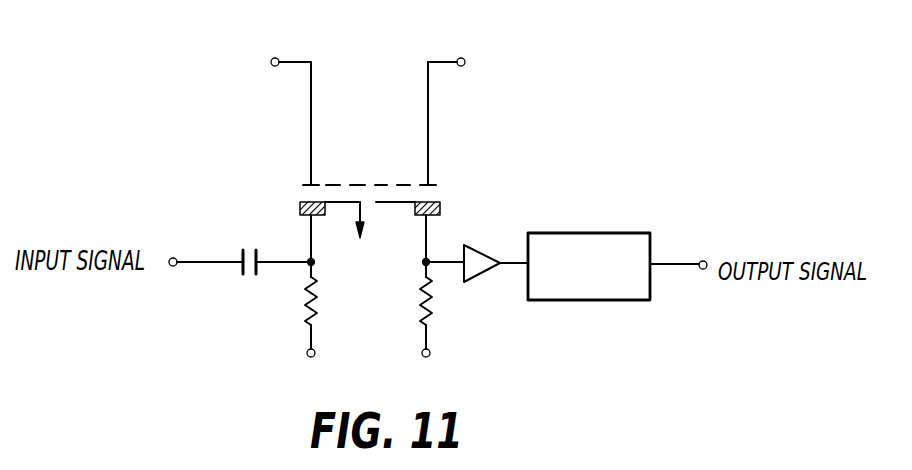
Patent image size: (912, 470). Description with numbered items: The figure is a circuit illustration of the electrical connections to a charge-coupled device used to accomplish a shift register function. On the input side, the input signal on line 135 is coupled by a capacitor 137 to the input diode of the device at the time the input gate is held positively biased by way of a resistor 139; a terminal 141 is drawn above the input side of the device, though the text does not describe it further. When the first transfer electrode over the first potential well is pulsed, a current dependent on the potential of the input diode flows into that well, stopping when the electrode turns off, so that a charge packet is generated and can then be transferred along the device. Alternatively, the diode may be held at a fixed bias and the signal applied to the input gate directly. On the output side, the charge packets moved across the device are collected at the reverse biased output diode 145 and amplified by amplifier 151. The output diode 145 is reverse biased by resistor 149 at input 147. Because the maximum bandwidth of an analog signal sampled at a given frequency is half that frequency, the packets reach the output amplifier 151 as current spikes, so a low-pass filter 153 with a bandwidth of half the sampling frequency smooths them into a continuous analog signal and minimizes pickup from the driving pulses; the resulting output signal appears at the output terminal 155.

The input signal line 135 is at (185, 264).
The capacitor 137 is at (247, 249).
The resistor 139 is at (304, 311).
The switch contact terminal 141 is at (311, 61).
The output diode 145 is at (397, 204).
The input 147 is at (445, 62).
The resistor 149 is at (429, 316).
The amplifier 151 is at (482, 253).
The low-pass filter 153 is at (607, 300).
The output signal terminal 155 is at (707, 263).